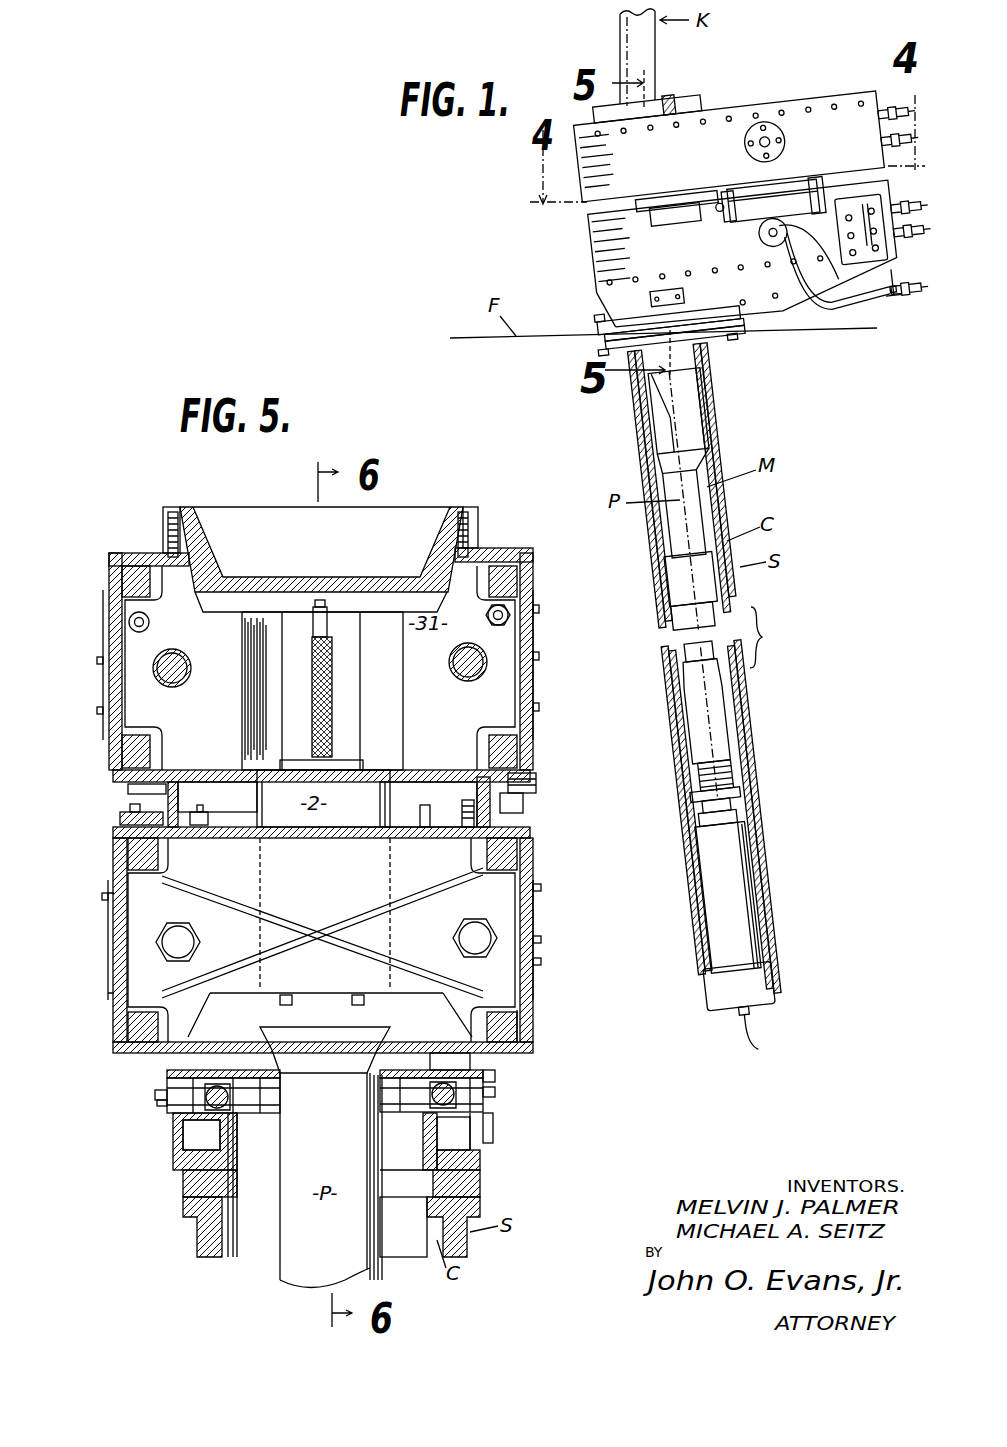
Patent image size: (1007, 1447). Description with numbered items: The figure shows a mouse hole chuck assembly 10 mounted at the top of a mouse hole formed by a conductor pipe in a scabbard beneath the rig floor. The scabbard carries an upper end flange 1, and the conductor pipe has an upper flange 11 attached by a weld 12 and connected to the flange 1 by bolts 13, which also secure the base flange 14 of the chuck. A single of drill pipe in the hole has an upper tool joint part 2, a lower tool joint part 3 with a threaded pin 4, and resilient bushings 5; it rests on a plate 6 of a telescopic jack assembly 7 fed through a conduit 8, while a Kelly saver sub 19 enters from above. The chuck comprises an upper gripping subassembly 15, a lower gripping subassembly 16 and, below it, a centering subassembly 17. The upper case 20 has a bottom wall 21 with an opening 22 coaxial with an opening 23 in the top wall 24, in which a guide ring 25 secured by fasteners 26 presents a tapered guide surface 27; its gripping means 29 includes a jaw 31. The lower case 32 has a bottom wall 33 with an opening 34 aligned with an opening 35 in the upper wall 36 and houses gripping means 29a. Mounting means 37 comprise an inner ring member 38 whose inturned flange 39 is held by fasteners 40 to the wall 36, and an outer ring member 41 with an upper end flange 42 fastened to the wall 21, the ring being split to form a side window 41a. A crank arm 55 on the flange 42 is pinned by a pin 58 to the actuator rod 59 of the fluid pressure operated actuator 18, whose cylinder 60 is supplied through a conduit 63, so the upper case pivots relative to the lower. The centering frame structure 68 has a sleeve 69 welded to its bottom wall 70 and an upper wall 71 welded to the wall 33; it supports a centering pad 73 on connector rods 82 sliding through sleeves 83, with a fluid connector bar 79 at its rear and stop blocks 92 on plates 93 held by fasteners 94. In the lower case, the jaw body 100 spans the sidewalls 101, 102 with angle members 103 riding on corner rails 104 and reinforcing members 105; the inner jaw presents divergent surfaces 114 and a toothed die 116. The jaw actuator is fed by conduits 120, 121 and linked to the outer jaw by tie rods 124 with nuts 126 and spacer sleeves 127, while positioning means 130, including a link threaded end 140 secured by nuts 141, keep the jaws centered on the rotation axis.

In FIG. 1, the upper end flange 1 is at (747, 333).
In FIG. 5, the upper end flange 1 is at (480, 1203).
In FIG. 1, the upper tool joint part 2 is at (660, 428).
In FIG. 5, the upper tool joint part 2 is at (323, 880).
In FIG. 1, the lower tool joint part 3 is at (727, 713).
In FIG. 1, the threaded pin 4 is at (730, 773).
In FIG. 1, the annular resilient bushings 5 is at (667, 578).
In FIG. 1, the plate 6 is at (740, 798).
In FIG. 1, the telescopic jack assembly 7 is at (727, 873).
In FIG. 1, the conduit 8 is at (747, 1037).
In FIG. 1, the mouse hole chuck assembly 10 is at (567, 236).
In FIG. 5, the mouse hole chuck assembly 10 is at (553, 758).
In FIG. 1, the upper flange 11 is at (603, 337).
In FIG. 5, the upper flange 11 is at (480, 1175).
In FIG. 5, the weld 12 is at (427, 1184).
In FIG. 1, the bolts 13 is at (618, 357).
In FIG. 1, the base flange 14 is at (597, 328).
In FIG. 5, the base flange 14 is at (470, 1160).
In FIG. 1, the upper gripping subassembly 15 is at (753, 95).
In FIG. 5, the upper gripping subassembly 15 is at (546, 674).
In FIG. 1, the lower gripping subassembly 16 is at (570, 261).
In FIG. 5, the lower gripping subassembly 16 is at (544, 916).
In FIG. 1, the centering subassembly 17 is at (611, 311).
In FIG. 5, the centering subassembly 17 is at (508, 1121).
In FIG. 1, the fluid pressure operated actuator 18 is at (778, 196).
In FIG. 1, the Kelly saver sub 19 is at (666, 90).
In FIG. 5, the housing or case structure 20 is at (535, 608).
In FIG. 5, the bottom wall 21 is at (425, 770).
In FIG. 5, the opening 22 is at (430, 776).
In FIG. 5, the opening 23 is at (438, 552).
In FIG. 5, the top wall 24 is at (500, 553).
In FIG. 5, the guide ring 25 is at (163, 528).
In FIG. 5, the fasteners 26 is at (175, 512).
In FIG. 5, the tapered guide surface 27 is at (460, 512).
In FIG. 5, the gripping means 29 is at (146, 645).
In FIG. 5, the gripping means 29a is at (111, 931).
In FIG. 5, the jaw 31 is at (321, 602).
In FIG. 5, the housing or case structure 32 is at (107, 900).
In FIG. 5, the bottom wall 33 is at (217, 1040).
In FIG. 5, the opening 34 is at (417, 1040).
In FIG. 5, the opening 35 is at (423, 828).
In FIG. 5, the upper wall 36 is at (445, 838).
In FIG. 5, the mounting means 37 is at (534, 809).
In FIG. 5, the cylindrical ring member 38 is at (175, 790).
In FIG. 5, the inturned flange 39 is at (213, 820).
In FIG. 5, the fasteners 40 is at (466, 800).
In FIG. 5, the outer cylindrical ring member 41 is at (477, 820).
In FIG. 5, the side window 41a is at (130, 806).
In FIG. 5, the upper end flange 42 is at (143, 790).
In FIG. 1, the crank arm 55 is at (648, 208).
In FIG. 5, the crank arm 55 is at (536, 780).
In FIG. 1, the pin 58 is at (683, 194).
In FIG. 1, the actuator rod 59 is at (720, 214).
In FIG. 1, the cylinder 60 is at (750, 197).
In FIG. 1, the conduit 63 is at (843, 307).
In FIG. 5, the frame structure 68 is at (492, 1067).
In FIG. 5, the cylindrical sleeve 69 is at (425, 1136).
In FIG. 5, the bottom wall 70 is at (165, 1072).
In FIG. 5, the upper wall 71 is at (185, 1135).
In FIG. 5, the centering pad 73 is at (250, 1086).
In FIG. 1, the fluid connector bar 79 is at (892, 302).
In FIG. 5, the connector rods 82 is at (230, 1102).
In FIG. 5, the sleeves 83 is at (437, 1088).
In FIG. 5, the stop blocks 92 is at (180, 1115).
In FIG. 5, the plates 93 is at (158, 1092).
In FIG. 5, the fasteners 94 is at (160, 1104).
In FIG. 5, the jaw body 100 is at (515, 945).
In FIG. 5, the sidewall 101 is at (113, 957).
In FIG. 5, the sidewall 102 is at (542, 890).
In FIG. 5, the angle members 103 is at (130, 602).
In FIG. 5, the corner rails 104 is at (122, 568).
In FIG. 5, the reinforcing members 105 is at (350, 920).
In FIG. 5, the divergent surfaces 114 is at (263, 707).
In FIG. 5, the toothed die 116 is at (332, 673).
In FIG. 1, the conduit 120 is at (884, 108).
In FIG. 1, the conduit 121 is at (887, 150).
In FIG. 5, the tie rods 124 is at (182, 653).
In FIG. 5, the nuts 126 is at (194, 948).
In FIG. 5, the spacer sleeve 127 is at (190, 680).
In FIG. 1, the positioning means 130 is at (752, 250).
In FIG. 5, the positioning means 130 is at (99, 682).
In FIG. 5, the threaded end 140 is at (128, 622).
In FIG. 5, the nuts 141 is at (492, 624).